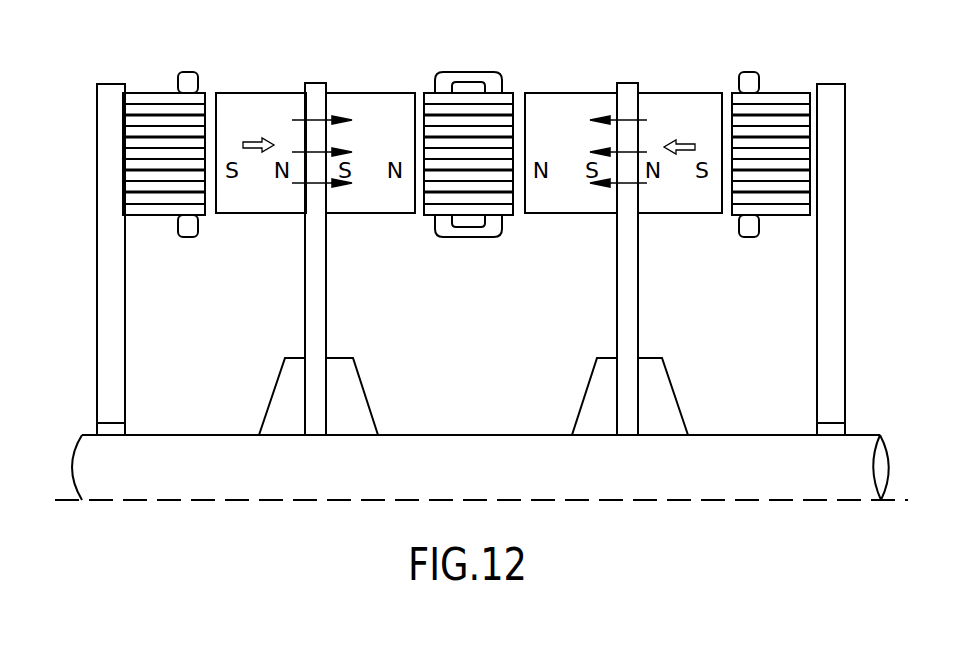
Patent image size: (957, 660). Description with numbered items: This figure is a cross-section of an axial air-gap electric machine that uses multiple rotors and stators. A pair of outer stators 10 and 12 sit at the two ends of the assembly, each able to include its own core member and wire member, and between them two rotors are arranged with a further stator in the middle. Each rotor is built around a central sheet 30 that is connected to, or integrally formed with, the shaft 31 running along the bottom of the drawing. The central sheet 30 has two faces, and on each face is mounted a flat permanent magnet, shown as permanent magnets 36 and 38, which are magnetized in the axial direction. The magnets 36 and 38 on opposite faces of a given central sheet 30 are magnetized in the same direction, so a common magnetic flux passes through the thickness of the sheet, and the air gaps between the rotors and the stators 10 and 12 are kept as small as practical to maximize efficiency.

The stator 10 is at (156, 107).
The stator 12 is at (788, 94).
The central sheet 30 is at (323, 284).
The shaft 31 is at (438, 445).
The permanent magnet 36 is at (257, 100).
The permanent magnet 38 is at (363, 95).